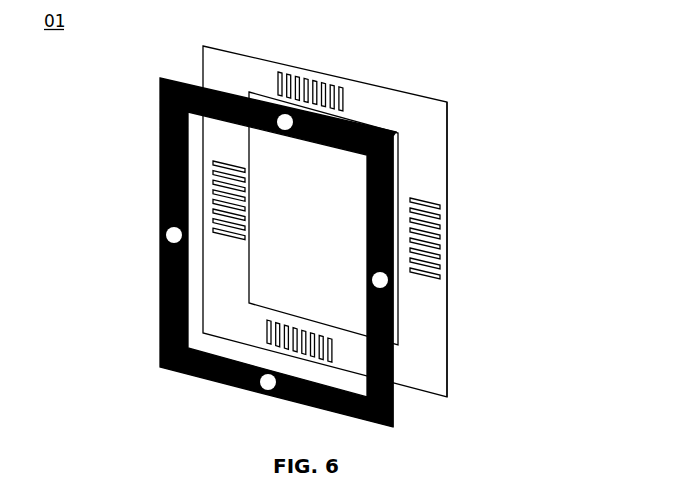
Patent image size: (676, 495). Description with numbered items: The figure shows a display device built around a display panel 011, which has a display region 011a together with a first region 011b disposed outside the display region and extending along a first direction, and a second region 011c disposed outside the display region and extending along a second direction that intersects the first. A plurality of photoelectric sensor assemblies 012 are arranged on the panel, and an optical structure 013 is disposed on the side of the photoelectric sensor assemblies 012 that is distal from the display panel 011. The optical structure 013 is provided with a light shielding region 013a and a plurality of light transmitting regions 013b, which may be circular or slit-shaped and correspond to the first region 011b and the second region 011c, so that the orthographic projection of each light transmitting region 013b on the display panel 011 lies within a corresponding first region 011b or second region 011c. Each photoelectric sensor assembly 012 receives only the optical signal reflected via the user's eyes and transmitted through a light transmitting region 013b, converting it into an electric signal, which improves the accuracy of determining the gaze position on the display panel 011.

The display panel 011 is at (373, 221).
The display region 011a is at (400, 162).
The first region 011b is at (368, 110).
The second region 011c is at (419, 190).
The photoelectric sensor assembly 012 is at (428, 243).
The optical structure 013 is at (354, 254).
The light shielding region 013a is at (393, 352).
The light transmitting region 013b is at (385, 284).